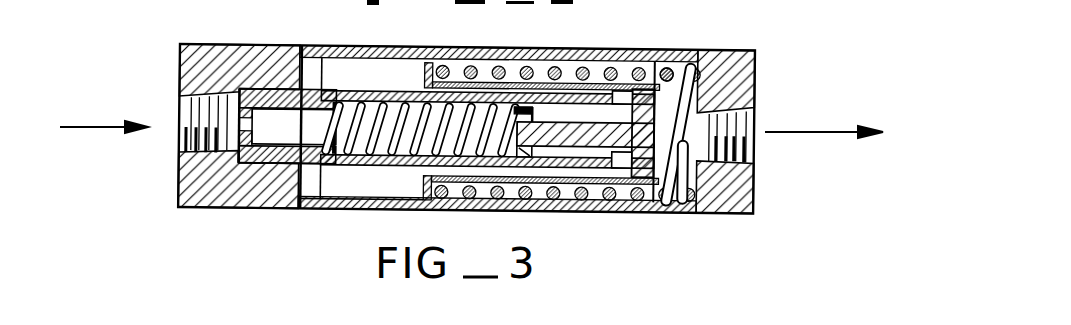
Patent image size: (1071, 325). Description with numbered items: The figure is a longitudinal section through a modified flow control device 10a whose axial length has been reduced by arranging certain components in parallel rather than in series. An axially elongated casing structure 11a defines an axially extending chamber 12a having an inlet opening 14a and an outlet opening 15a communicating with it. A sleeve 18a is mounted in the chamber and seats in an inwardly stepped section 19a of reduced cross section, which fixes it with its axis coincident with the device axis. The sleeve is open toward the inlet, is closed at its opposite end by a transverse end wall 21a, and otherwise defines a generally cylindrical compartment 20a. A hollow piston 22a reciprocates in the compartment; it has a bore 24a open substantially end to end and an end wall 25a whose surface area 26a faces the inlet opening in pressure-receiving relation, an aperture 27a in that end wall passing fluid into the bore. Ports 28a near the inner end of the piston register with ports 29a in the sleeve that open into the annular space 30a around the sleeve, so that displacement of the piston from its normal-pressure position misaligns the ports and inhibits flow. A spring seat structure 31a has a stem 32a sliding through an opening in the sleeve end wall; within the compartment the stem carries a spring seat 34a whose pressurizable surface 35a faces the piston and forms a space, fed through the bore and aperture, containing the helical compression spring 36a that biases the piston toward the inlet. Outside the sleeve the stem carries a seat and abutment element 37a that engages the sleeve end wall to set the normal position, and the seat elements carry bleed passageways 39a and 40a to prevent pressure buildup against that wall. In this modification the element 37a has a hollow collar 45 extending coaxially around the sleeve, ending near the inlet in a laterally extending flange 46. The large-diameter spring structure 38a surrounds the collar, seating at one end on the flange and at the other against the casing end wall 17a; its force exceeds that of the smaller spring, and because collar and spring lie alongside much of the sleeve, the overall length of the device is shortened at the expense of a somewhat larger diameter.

The flow control device 10a is at (737, 51).
The casing structure 11a is at (692, 105).
The chamber 12a is at (717, 83).
The inlet opening 14a is at (193, 128).
The outlet opening 15a is at (740, 117).
The end wall of casing structure 17a is at (735, 184).
The sleeve 18a is at (358, 92).
The stepped section 19a is at (258, 88).
The compartment 20a is at (357, 155).
The transverse end wall of sleeve 21a is at (642, 153).
The piston 22a is at (265, 94).
The bore 24a is at (265, 148).
The end wall of piston 25a is at (230, 150).
The pressure-receiving surface area 26a is at (233, 140).
The port or aperture 27a is at (247, 125).
The piston ports 28a is at (307, 150).
The sleeve ports 29a is at (313, 100).
The annular space 30a is at (387, 183).
The spring seat structure 31a is at (615, 147).
The stem 32a is at (582, 126).
The spring seat 34a is at (540, 120).
The pressurizable surface 35a is at (517, 135).
The helical compression spring 36a is at (383, 106).
The seat and abutment element 37a is at (660, 62).
The spring structure 38a is at (607, 83).
The bleed passageway 39a is at (548, 86).
The bleed passageway 40a is at (672, 155).
The hollow collar 45 is at (485, 78).
The laterally extending flange 46 is at (433, 184).